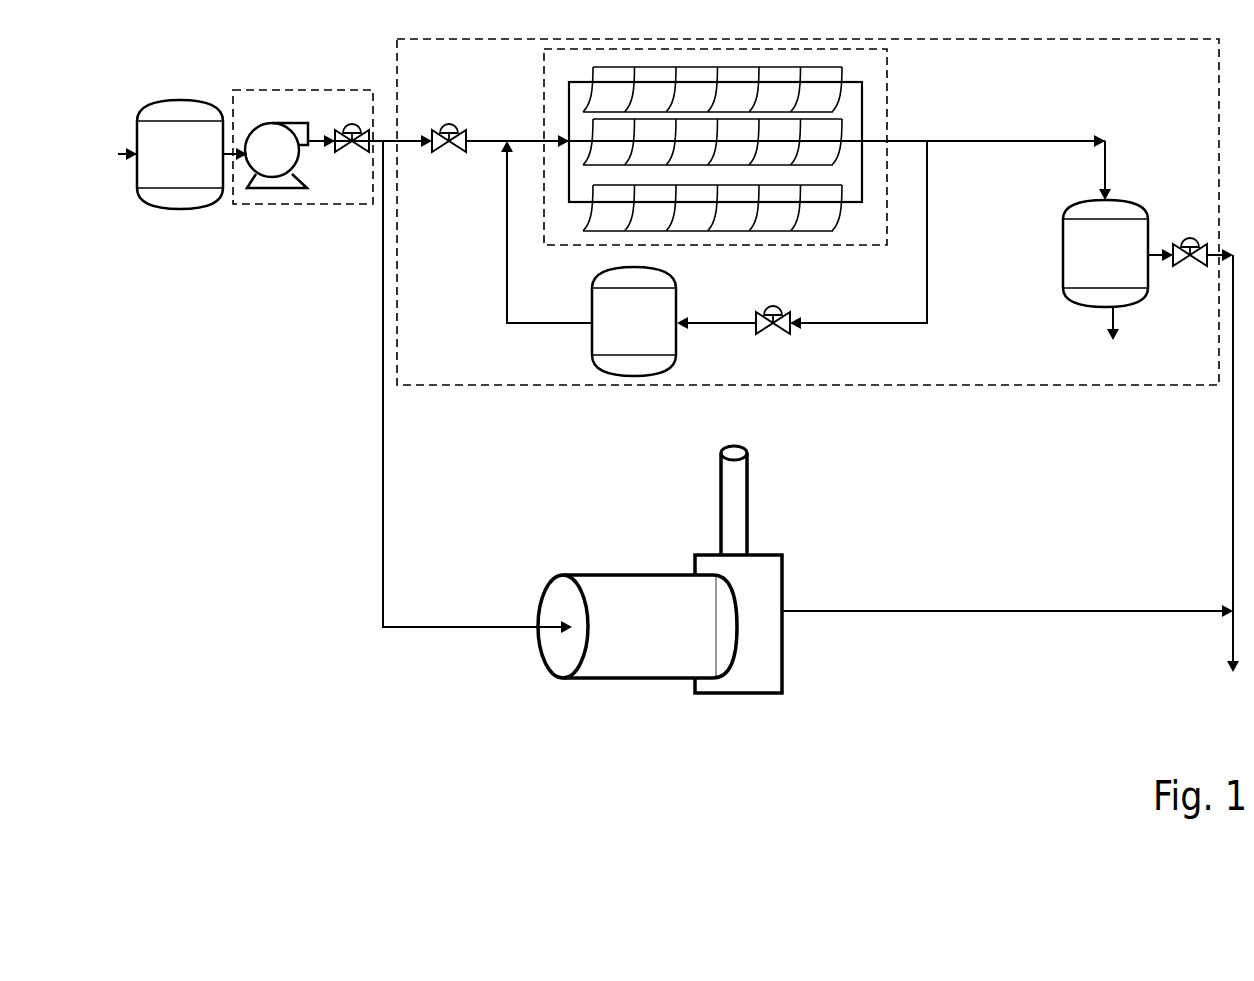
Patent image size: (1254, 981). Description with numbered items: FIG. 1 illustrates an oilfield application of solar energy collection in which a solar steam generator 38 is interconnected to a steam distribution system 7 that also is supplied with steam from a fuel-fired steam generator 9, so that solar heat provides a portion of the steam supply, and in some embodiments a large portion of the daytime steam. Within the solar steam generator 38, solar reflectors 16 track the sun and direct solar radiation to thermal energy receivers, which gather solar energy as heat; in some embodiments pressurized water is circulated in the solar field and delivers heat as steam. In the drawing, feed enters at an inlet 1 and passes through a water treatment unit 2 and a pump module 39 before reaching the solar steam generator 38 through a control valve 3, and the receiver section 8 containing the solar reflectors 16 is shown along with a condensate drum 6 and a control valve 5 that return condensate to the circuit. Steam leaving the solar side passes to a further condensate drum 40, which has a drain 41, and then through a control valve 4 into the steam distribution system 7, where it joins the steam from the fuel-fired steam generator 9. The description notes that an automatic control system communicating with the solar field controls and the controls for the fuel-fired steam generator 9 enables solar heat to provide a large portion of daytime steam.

The feed water inlet 1 is at (117, 148).
The water treatment unit 2 is at (160, 98).
The control valve 3 is at (442, 122).
The control valve 4 is at (1181, 235).
The control valve 5 is at (765, 300).
The condensate drum 6 is at (596, 279).
The steam distribution system 7 is at (1227, 660).
The heat exchanger 8 is at (699, 147).
The fuel-fired steam generator 9 is at (573, 566).
The solar reflectors 16 is at (832, 110).
The solar steam generator 38 is at (391, 65).
The pump module 39 is at (232, 90).
The condensate drum 40 is at (1078, 197).
The drain outlet 41 is at (1125, 335).